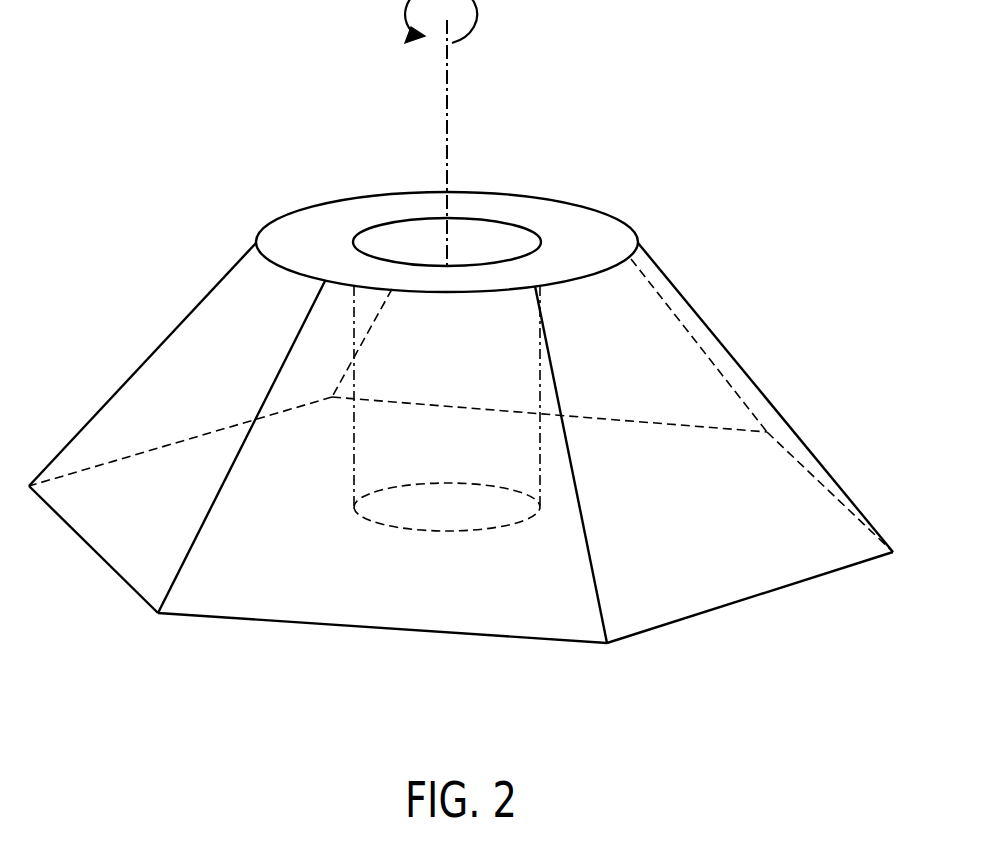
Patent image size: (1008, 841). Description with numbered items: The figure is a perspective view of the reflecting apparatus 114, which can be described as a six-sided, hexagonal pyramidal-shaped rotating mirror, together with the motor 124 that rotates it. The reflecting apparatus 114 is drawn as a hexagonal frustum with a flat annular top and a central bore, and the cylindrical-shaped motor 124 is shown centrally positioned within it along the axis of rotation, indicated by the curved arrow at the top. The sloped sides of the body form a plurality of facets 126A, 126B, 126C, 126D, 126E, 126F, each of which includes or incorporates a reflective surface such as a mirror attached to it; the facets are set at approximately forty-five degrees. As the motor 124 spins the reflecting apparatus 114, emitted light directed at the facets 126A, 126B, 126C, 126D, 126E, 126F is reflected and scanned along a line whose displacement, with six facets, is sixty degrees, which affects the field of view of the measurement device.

The reflecting apparatus 114 is at (150, 134).
The motor 124 is at (447, 155).
The facet 126A is at (705, 600).
The facet 126B is at (422, 620).
The facet 126C is at (122, 555).
The facet 126D is at (157, 362).
The facet 126E is at (325, 375).
The facet 126F is at (784, 435).